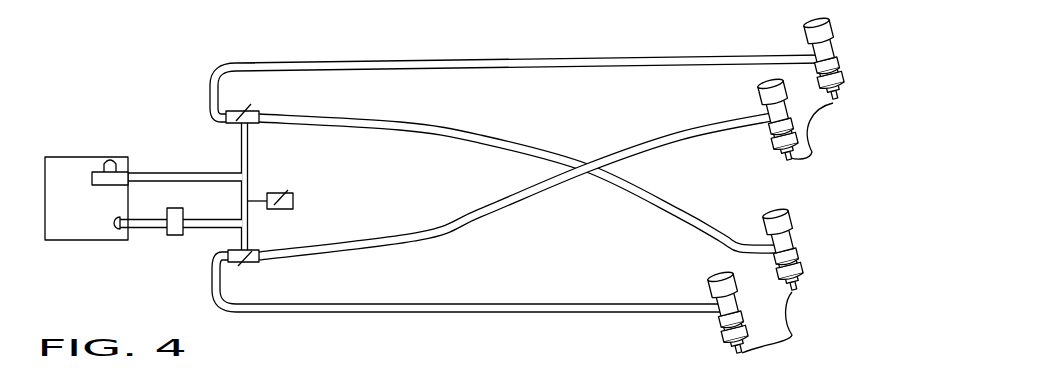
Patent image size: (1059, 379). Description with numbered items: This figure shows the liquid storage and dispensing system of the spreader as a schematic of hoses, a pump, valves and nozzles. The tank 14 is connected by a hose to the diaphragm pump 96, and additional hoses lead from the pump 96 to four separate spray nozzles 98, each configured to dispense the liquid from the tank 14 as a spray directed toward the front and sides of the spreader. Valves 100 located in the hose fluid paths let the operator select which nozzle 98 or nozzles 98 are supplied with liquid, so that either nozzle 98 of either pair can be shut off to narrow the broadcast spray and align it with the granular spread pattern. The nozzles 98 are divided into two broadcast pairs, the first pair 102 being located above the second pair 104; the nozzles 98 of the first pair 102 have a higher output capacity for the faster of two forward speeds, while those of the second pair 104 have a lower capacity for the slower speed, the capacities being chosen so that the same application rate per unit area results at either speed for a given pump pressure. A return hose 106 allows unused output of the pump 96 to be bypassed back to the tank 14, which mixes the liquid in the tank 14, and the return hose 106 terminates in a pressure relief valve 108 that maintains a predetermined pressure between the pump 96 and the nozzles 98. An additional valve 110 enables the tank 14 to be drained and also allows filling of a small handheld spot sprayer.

The tank 14 is at (92, 241).
The diaphragm pump 96 is at (173, 236).
The spray nozzles 98 is at (802, 40).
The valves 100 is at (258, 112).
The first nozzle pair 102 is at (825, 135).
The second nozzle pair 104 is at (791, 322).
The return hose 106 is at (210, 173).
The pressure relief valve 108 is at (94, 171).
The additional valve 110 is at (293, 201).